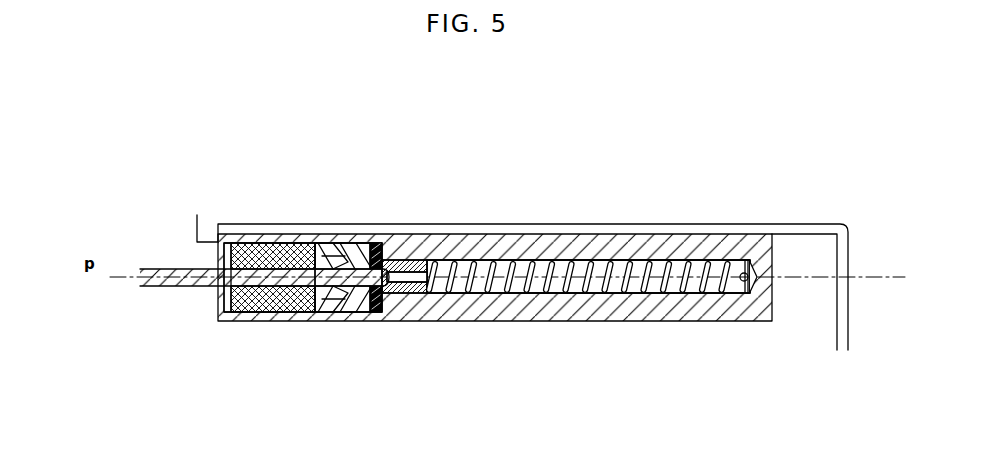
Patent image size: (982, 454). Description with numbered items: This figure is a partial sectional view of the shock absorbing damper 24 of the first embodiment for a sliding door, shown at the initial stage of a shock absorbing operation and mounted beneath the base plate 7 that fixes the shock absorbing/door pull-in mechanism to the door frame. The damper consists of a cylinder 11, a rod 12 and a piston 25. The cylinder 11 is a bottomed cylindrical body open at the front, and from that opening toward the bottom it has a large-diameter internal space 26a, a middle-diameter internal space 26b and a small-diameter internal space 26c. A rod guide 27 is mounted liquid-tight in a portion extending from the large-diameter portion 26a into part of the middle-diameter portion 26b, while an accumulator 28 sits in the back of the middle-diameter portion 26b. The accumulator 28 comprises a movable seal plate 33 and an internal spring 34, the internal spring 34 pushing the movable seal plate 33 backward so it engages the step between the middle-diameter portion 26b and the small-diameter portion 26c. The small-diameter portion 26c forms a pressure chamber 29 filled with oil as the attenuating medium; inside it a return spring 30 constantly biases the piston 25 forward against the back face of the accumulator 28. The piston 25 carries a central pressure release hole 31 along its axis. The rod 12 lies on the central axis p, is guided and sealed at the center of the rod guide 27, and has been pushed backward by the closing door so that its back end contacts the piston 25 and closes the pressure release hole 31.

The base plate 7 is at (733, 225).
The cylinder 11 is at (617, 246).
The rod 12 is at (150, 268).
The shock absorbing damper 24 is at (611, 128).
The piston 25 is at (412, 257).
The large-diameter internal space 26a is at (259, 300).
The middle-diameter internal space 26b is at (353, 300).
The small-diameter internal space 26c is at (508, 291).
The rod guide 27 is at (253, 246).
The accumulator 28 is at (330, 247).
The pressure chamber 29 is at (485, 266).
The return spring 30 is at (551, 268).
The pressure release hole 31 is at (409, 282).
The movable seal plate 33 is at (377, 247).
The internal spring 34 is at (338, 250).